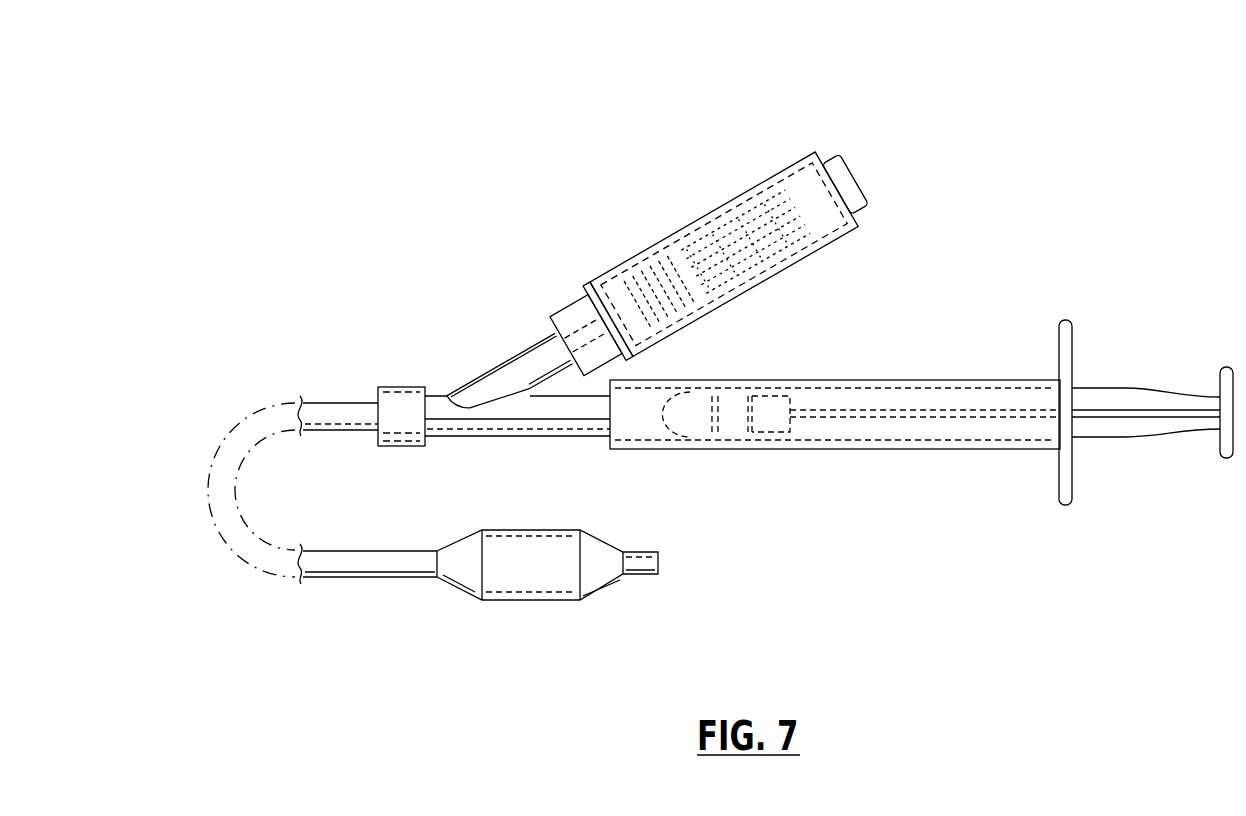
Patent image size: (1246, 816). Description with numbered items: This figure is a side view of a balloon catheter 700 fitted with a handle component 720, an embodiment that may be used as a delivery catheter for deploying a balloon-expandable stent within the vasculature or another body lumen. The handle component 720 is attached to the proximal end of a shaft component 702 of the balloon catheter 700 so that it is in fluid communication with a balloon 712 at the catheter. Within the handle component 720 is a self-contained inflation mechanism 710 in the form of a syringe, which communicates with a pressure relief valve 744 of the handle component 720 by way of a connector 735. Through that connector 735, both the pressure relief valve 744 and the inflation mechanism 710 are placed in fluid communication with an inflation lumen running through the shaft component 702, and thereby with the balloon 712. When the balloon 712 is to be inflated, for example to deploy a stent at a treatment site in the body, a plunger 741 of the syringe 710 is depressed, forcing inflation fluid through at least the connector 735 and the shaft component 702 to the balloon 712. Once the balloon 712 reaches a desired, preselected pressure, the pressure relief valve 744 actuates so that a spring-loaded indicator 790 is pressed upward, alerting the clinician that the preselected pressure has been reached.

The balloon catheter 700 is at (540, 176).
The shaft component 702 is at (337, 403).
The self-contained inflation mechanism 710 is at (1110, 329).
The balloon 712 is at (522, 600).
The handle component 720 is at (923, 296).
The connector 735 is at (510, 433).
The plunger 741 is at (1148, 437).
The pressure relief valve 744 is at (693, 208).
The spring-loaded indicator 790 is at (857, 177).